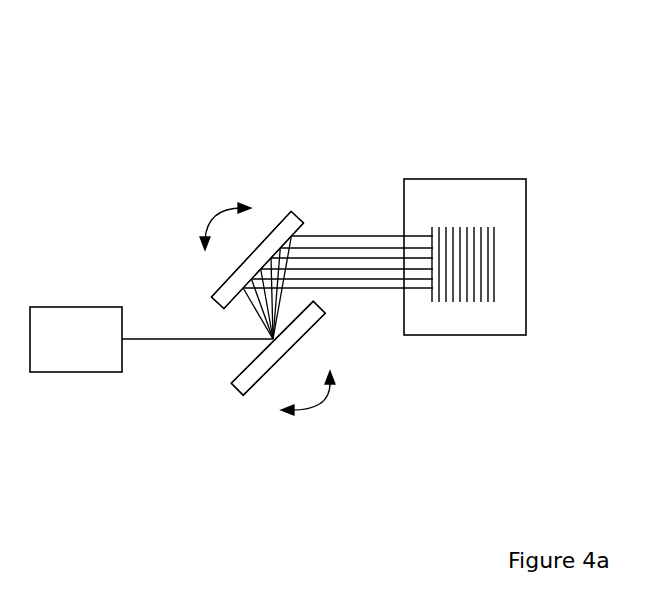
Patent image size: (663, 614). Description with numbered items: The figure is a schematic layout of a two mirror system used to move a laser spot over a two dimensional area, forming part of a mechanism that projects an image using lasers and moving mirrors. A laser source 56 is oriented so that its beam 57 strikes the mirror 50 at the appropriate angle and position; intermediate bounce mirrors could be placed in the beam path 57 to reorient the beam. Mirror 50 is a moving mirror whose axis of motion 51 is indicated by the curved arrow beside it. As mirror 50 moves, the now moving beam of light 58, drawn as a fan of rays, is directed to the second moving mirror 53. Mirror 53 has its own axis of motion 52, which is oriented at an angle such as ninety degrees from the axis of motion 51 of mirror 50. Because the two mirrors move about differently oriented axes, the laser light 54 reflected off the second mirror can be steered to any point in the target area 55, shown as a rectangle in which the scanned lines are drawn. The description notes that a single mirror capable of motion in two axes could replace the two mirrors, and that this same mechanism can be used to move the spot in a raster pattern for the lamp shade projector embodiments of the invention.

The mirror 50 is at (288, 411).
The axis of motion 51 is at (403, 403).
The axis of motion 52 is at (205, 223).
The moving mirror 53 is at (205, 256).
The laser light 54 is at (338, 206).
The target area 55 is at (465, 175).
The laser source 56 is at (93, 409).
The beam 57 is at (197, 366).
The moving beam of light 58 is at (218, 287).